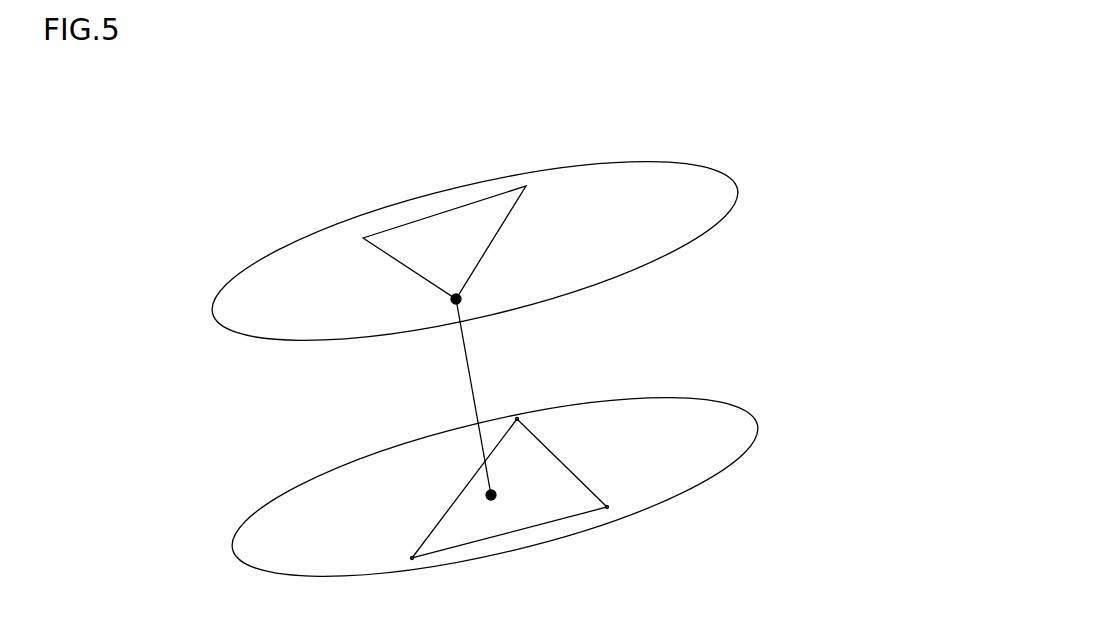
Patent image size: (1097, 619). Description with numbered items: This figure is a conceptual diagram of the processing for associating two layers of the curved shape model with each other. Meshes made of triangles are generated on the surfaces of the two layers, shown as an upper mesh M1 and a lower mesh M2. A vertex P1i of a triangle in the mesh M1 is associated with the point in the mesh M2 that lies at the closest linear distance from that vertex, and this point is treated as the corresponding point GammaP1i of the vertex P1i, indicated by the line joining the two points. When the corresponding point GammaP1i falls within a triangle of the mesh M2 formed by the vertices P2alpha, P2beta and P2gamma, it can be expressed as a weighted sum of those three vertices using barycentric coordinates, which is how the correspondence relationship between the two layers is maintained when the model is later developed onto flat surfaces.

The mesh of first layer M1 is at (733, 184).
The mesh of second layer M2 is at (752, 414).
The vertex of triangle in mesh M1 P1i is at (474, 293).
The corresponding point GammaP1i is at (516, 498).
The vertex of triangle in mesh M2 P2alpha is at (527, 401).
The vertex of triangle in mesh M2 P2beta is at (393, 547).
The vertex of triangle in mesh M2 P2gamma is at (619, 499).